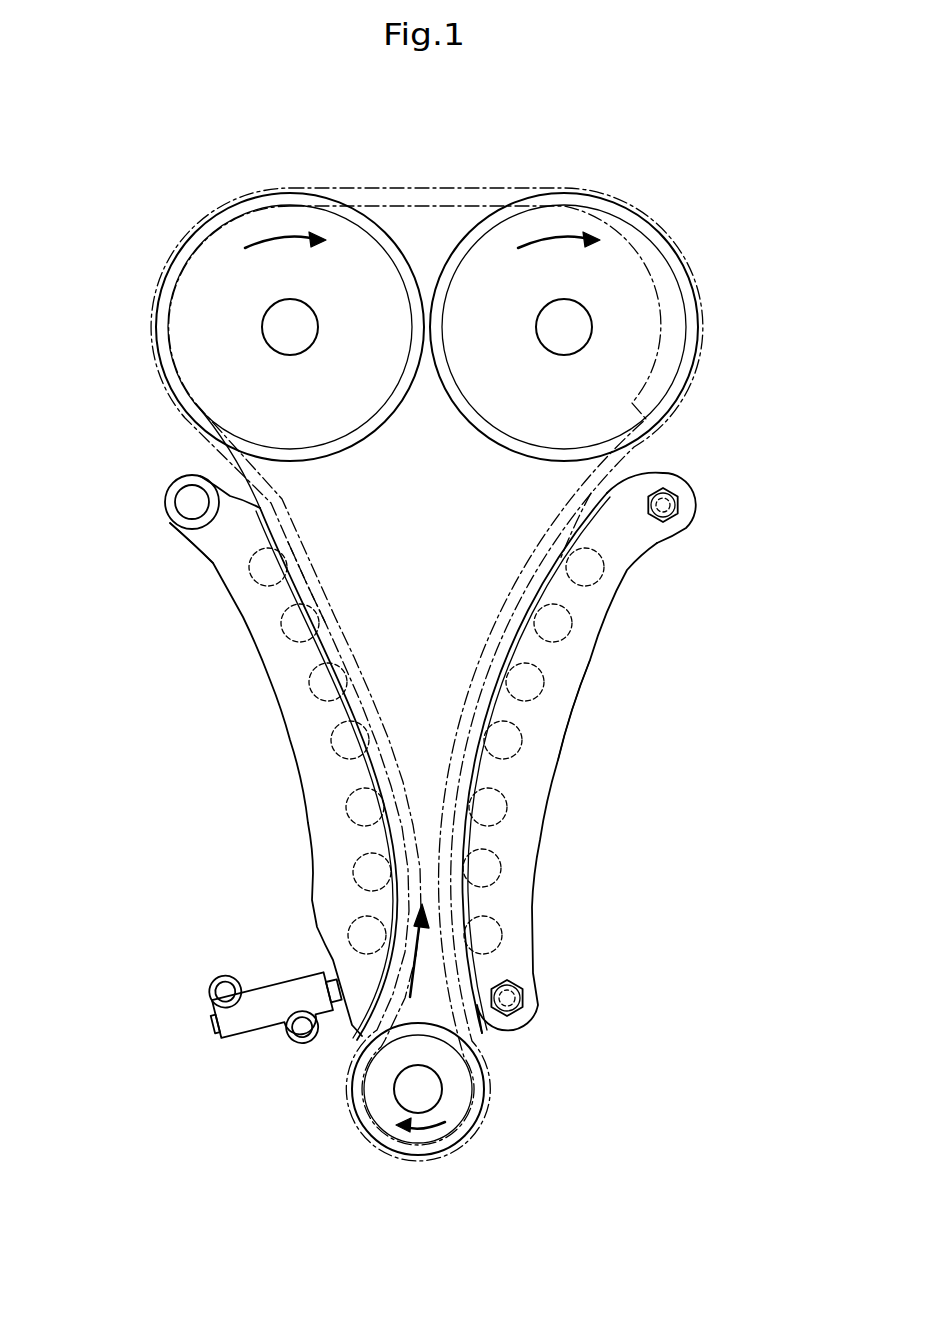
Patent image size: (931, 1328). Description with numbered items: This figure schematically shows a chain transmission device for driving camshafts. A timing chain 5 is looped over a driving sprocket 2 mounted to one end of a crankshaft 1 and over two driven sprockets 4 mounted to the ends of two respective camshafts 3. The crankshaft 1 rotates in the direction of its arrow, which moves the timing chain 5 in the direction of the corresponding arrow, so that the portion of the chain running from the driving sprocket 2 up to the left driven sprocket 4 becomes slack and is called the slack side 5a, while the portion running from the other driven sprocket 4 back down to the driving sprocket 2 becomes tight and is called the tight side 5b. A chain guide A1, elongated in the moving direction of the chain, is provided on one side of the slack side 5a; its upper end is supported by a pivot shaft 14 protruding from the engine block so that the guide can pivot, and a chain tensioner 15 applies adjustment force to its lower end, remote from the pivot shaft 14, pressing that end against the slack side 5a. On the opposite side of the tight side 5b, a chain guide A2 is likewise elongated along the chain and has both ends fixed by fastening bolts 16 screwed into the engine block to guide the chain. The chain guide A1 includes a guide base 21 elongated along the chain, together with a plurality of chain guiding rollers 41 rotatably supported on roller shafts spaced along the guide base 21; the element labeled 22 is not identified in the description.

The crankshaft 1 is at (411, 1097).
The driving sprocket 2 is at (385, 1073).
The camshaft 3 is at (288, 327).
The driven sprocket 4 is at (340, 232).
The timing chain 5 is at (425, 188).
The slack side 5a is at (302, 543).
The tight side 5b is at (535, 577).
The pivot shaft 14 is at (192, 502).
The chain tensioner 15 is at (280, 972).
The fastening bolt 16 is at (675, 503).
The guide base 21 is at (213, 572).
The guide shoe 22 is at (287, 703).
The chain guiding roller 41 is at (268, 586).
The chain guide A1 is at (158, 524).
The chain guide A2 is at (586, 696).